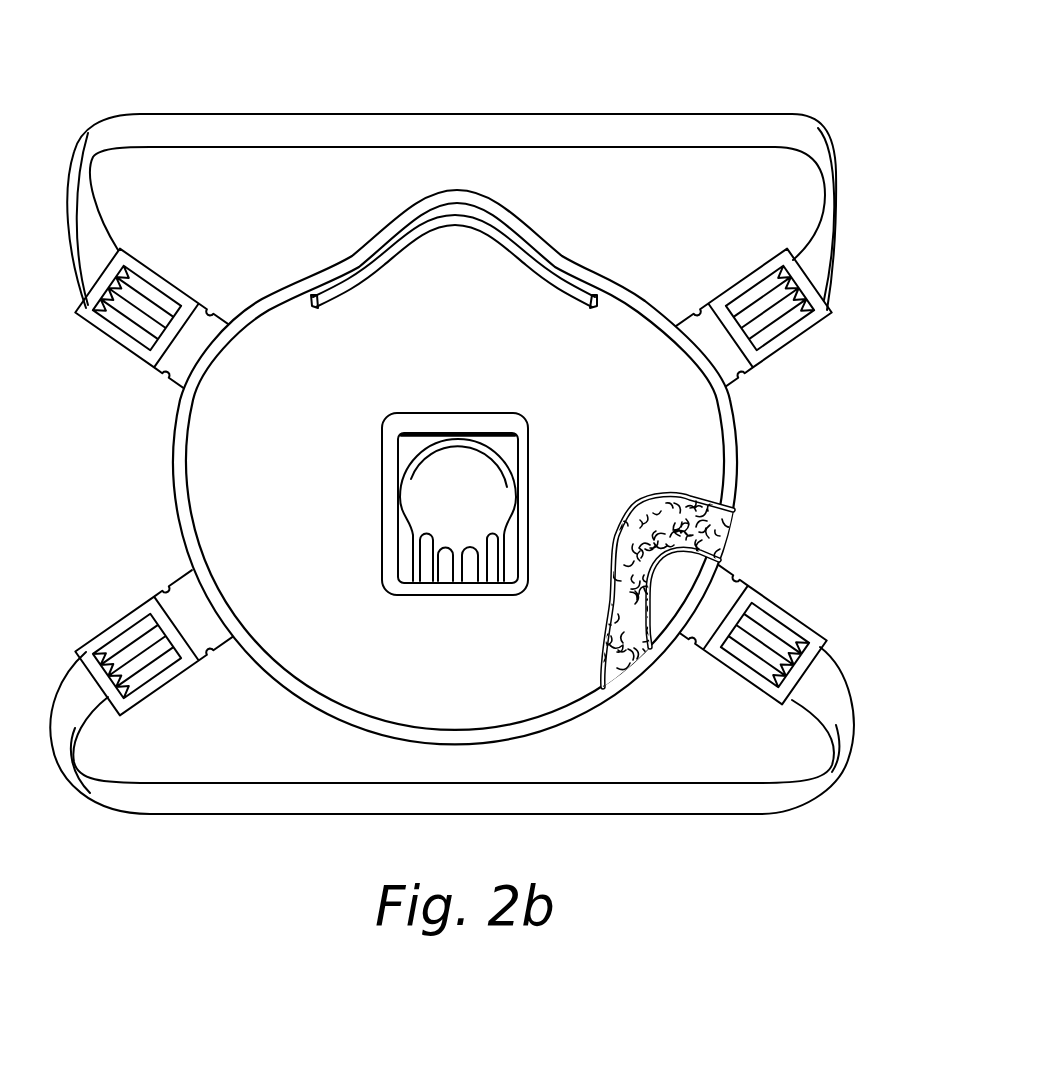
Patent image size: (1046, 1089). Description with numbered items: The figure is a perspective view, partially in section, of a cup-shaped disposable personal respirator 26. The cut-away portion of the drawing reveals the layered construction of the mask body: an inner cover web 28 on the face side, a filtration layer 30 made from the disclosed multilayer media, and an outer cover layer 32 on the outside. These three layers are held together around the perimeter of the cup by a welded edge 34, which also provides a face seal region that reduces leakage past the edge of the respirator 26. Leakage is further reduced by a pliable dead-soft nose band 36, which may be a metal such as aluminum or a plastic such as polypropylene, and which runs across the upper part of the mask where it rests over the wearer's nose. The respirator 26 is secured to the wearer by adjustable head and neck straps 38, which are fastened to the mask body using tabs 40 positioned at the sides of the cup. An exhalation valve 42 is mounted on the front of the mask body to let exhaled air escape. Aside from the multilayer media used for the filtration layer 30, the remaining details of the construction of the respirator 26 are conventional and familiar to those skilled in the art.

The disposable personal respirator 26 is at (757, 80).
The inner cover web 28 is at (669, 590).
The filtration layer 30 is at (720, 526).
The outer cover layer 32 is at (338, 668).
The welded edge 34 is at (576, 710).
The nose band 36 is at (576, 290).
The head and neck straps 38 is at (246, 120).
The tabs 40 is at (150, 368).
The exhalation valve 42 is at (495, 510).